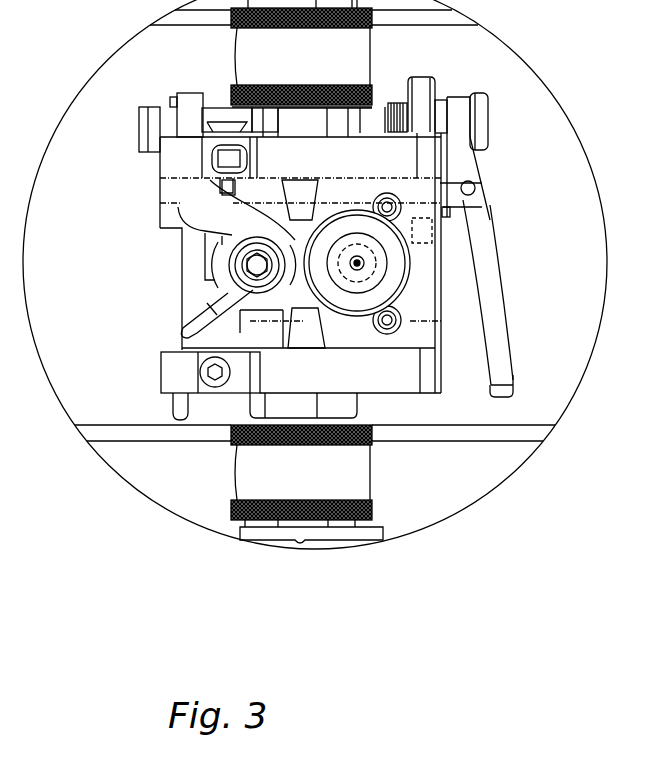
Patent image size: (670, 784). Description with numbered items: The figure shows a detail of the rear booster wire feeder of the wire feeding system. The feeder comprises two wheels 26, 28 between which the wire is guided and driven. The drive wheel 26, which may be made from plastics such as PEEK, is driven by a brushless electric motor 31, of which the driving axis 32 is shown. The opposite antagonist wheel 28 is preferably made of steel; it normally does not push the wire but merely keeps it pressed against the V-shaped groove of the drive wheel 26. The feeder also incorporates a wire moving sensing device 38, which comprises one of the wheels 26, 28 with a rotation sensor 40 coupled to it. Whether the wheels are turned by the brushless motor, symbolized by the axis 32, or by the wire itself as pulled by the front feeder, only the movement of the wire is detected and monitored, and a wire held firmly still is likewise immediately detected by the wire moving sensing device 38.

The drive wheel 26 is at (400, 255).
The antagonist wheel 28 is at (213, 267).
The brushless motor 31 is at (368, 267).
The driving axis 32 is at (353, 268).
The wire moving sensing device 38 is at (344, 196).
The rotation sensor 40 is at (428, 220).